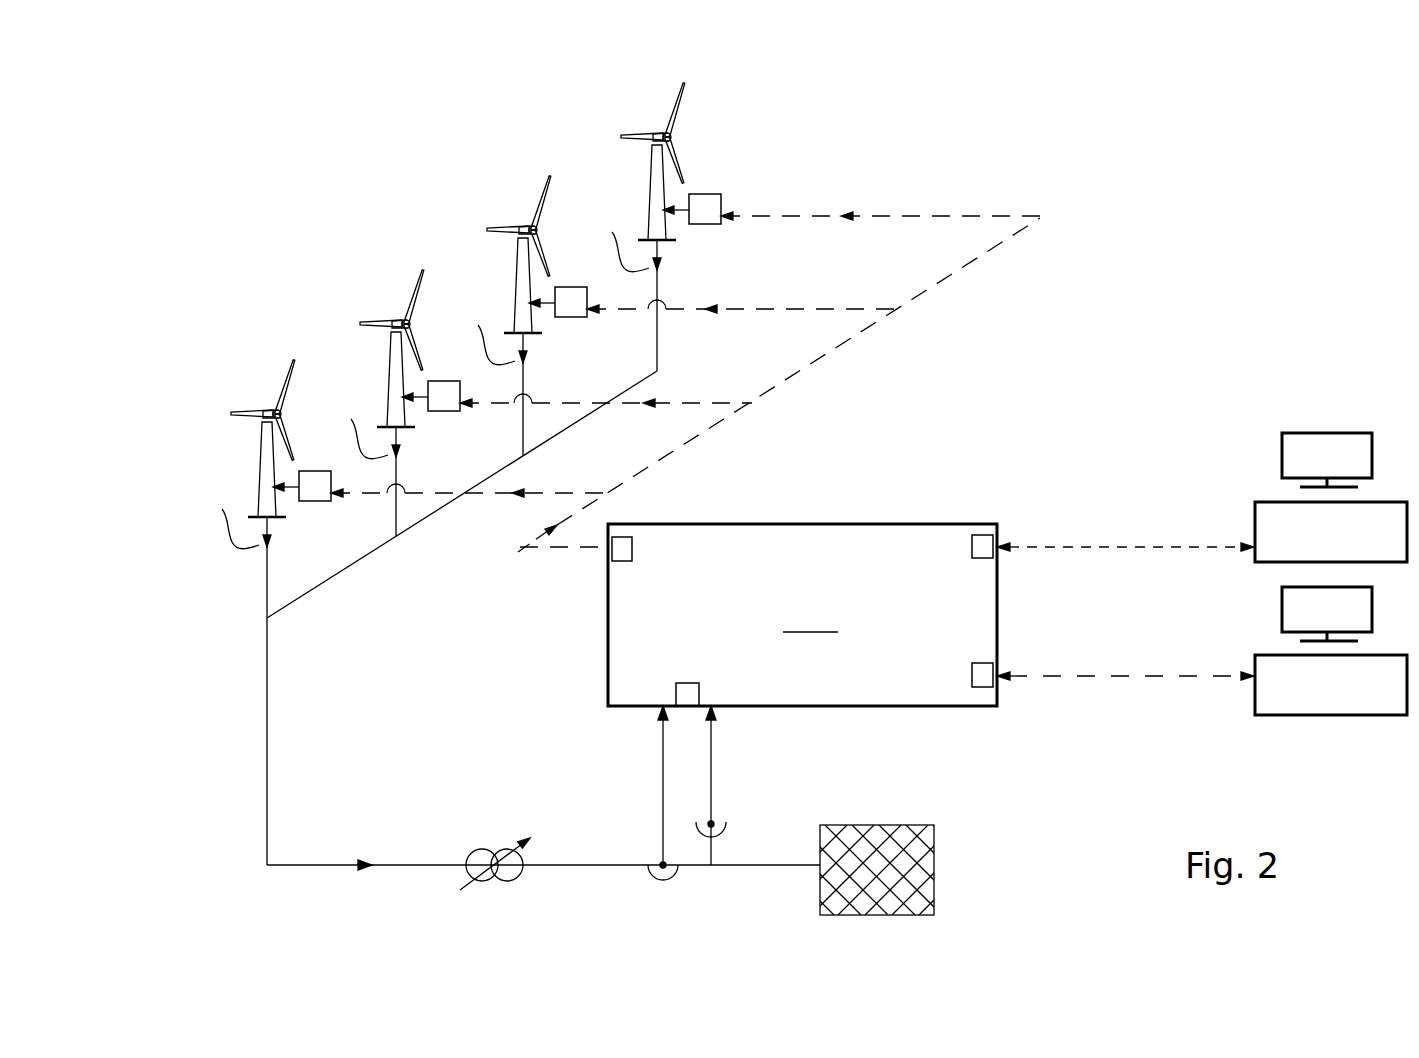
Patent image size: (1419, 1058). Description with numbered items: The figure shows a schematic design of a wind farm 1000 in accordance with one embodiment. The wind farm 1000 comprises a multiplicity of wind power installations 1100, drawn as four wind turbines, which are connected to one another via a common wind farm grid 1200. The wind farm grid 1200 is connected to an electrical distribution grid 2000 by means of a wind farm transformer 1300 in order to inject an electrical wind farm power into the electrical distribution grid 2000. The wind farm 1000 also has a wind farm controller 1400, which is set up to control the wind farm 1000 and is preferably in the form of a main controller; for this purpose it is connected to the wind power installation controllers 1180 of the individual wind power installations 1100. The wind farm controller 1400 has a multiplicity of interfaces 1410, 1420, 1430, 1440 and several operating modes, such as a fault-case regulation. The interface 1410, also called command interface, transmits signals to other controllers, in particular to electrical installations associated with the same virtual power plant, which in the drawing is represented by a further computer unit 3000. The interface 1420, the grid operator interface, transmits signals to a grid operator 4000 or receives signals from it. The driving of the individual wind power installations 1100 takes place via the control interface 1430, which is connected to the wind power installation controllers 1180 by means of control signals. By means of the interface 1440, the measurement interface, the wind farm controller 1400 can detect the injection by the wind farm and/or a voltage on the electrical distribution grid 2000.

The wind farm 1000 is at (1212, 236).
The wind power installation 1100 is at (422, 316).
The wind power installation controller 1180 is at (651, 384).
The wind farm grid 1200 is at (267, 712).
The wind farm transformer 1300 is at (482, 850).
The wind farm controller 1400 is at (802, 702).
The command interface 1410 is at (977, 540).
The grid operator interface 1420 is at (983, 682).
The control interface 1430 is at (622, 548).
The measurement interface 1440 is at (686, 688).
The electrical distribution grid 2000 is at (875, 825).
The wind park operator computer 3000 is at (1353, 544).
The grid operator 4000 is at (1353, 696).